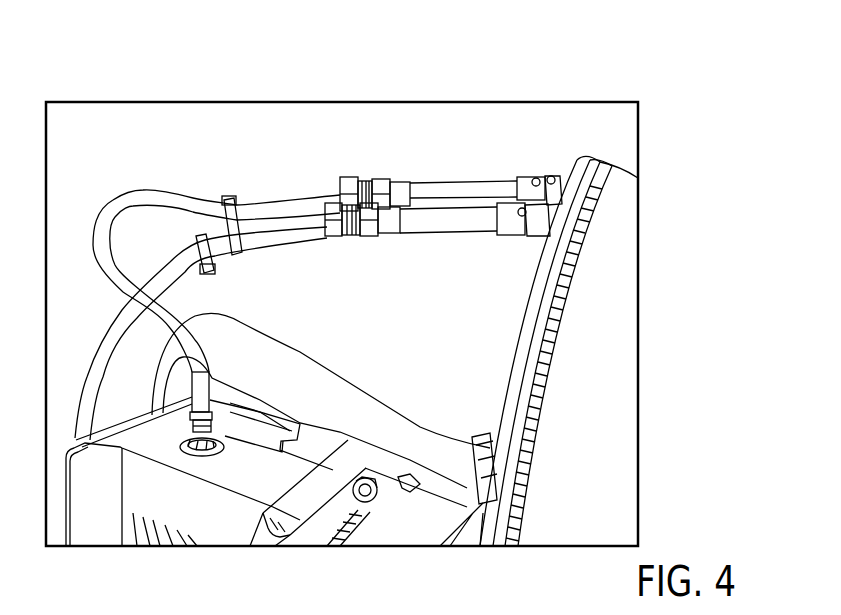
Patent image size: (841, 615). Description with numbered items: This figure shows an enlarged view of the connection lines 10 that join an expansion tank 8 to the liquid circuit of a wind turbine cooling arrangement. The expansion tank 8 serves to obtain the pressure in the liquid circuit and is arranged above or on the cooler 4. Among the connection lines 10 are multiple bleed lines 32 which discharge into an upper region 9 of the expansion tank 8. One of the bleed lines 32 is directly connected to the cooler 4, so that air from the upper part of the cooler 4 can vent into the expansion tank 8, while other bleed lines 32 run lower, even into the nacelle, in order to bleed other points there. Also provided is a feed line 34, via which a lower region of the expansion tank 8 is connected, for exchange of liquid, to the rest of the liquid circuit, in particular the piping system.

The cooler 4 is at (215, 513).
The expansion tank 8 is at (595, 404).
The upper region 9 is at (597, 213).
The connection lines 10 is at (453, 93).
The bleed lines 32 is at (268, 188).
The feed line 34 is at (426, 457).